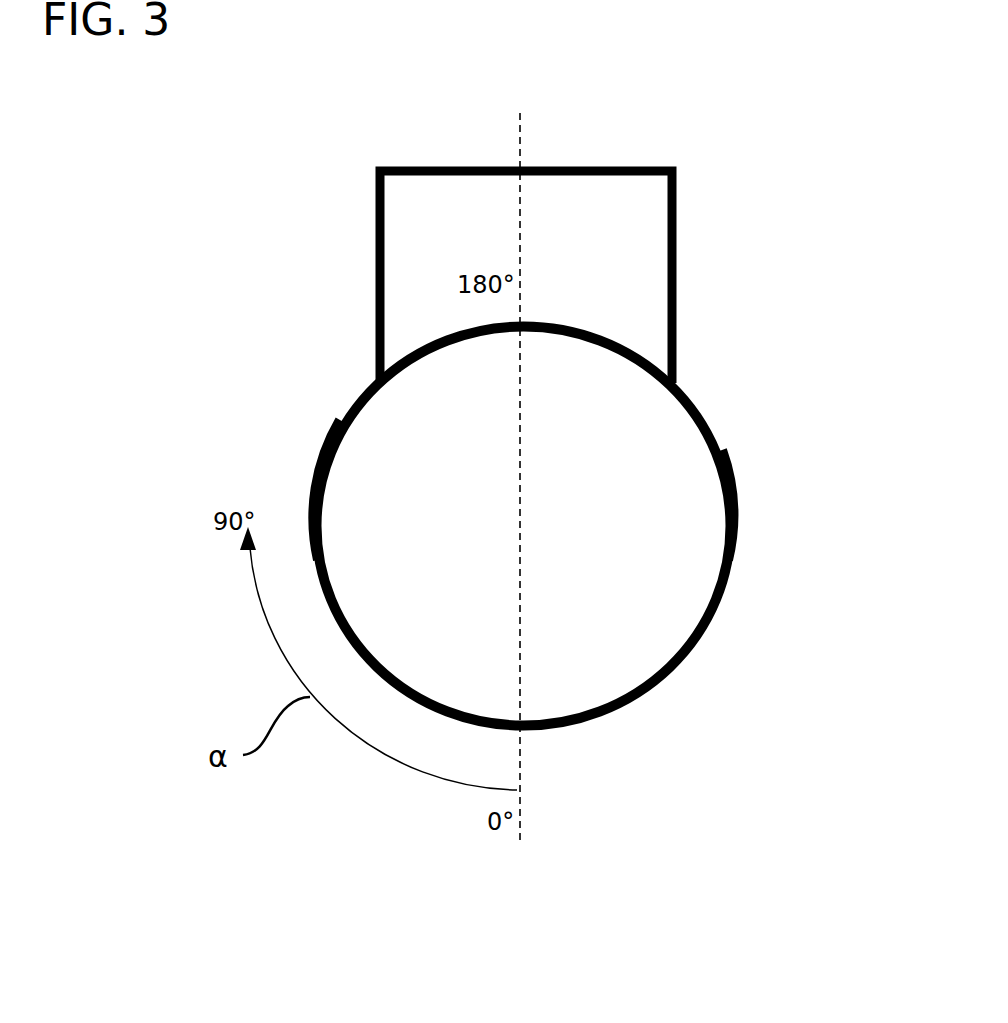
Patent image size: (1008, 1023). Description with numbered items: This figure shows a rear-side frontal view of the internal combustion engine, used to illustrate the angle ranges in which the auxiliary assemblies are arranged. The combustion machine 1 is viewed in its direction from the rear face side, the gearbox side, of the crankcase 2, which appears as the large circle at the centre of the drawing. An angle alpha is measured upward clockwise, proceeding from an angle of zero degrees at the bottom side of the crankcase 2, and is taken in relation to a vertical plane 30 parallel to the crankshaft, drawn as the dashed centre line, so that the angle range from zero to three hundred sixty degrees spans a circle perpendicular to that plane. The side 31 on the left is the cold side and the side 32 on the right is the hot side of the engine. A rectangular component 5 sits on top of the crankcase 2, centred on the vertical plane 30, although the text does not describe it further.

The combustion machine 1 is at (512, 380).
The crankcase 2 is at (715, 437).
The housing / holder 5 is at (620, 160).
The vertical plane 30 is at (513, 135).
The cold side 31 is at (330, 425).
The hot side 32 is at (748, 499).